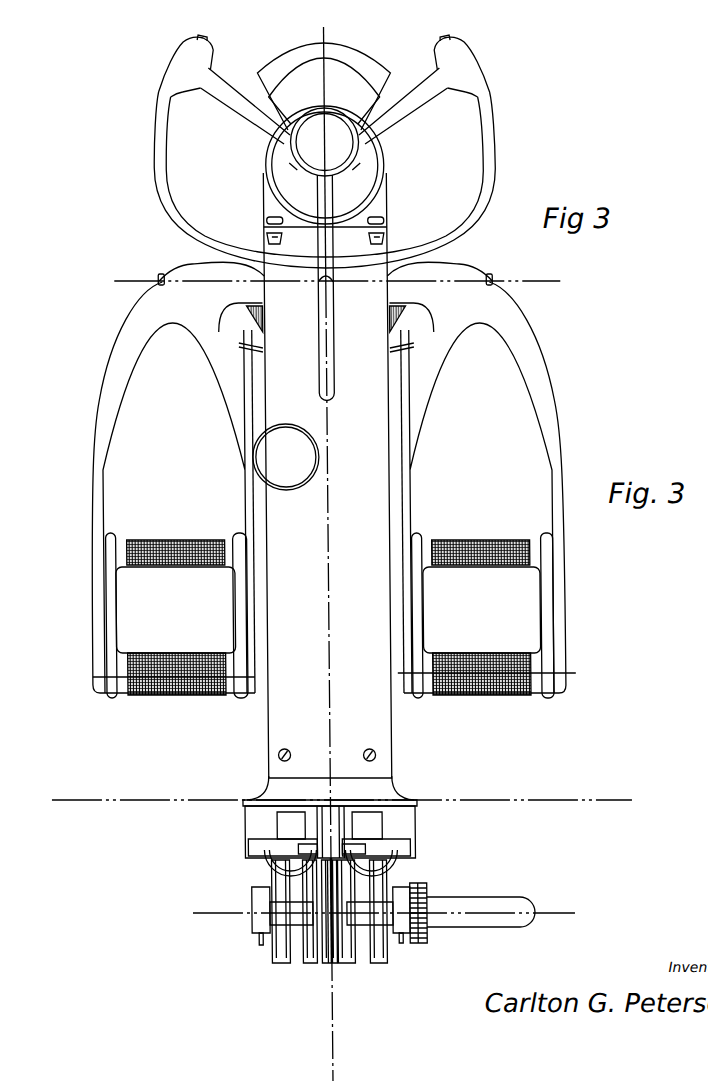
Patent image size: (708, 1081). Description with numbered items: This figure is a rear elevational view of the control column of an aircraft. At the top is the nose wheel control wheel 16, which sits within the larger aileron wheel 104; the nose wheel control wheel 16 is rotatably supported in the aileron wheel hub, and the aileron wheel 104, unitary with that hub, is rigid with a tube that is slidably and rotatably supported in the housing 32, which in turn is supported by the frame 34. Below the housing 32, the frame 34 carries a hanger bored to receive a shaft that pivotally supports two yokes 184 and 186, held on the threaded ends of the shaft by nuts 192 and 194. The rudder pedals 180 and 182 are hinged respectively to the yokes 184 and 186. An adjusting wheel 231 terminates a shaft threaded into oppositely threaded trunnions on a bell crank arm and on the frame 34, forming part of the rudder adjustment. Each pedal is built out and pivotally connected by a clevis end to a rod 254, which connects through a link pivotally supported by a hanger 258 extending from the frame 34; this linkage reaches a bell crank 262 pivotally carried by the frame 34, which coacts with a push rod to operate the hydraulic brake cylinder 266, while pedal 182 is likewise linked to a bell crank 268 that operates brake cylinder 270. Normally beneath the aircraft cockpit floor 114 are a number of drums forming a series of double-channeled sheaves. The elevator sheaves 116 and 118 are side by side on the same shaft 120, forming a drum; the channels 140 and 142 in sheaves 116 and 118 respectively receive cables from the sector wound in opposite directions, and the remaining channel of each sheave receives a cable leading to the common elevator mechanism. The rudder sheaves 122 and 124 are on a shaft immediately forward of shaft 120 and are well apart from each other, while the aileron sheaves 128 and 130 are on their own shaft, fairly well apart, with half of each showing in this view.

The nose wheel control wheel 16 is at (290, 50).
The aileron wheel 104 is at (493, 128).
The housing 32 is at (266, 180).
The frame 34 is at (387, 477).
The nut 192 is at (156, 279).
The nut 194 is at (490, 280).
The yoke 184 is at (90, 441).
The yoke 186 is at (560, 388).
The hanger 258 is at (243, 330).
The rod 254 is at (247, 373).
The adjusting wheel 231 is at (292, 490).
The rudder pedal 180 is at (146, 697).
The rudder pedal 182 is at (491, 695).
The aircraft cockpit floor 114 is at (522, 800).
The bell crank 262 is at (270, 812).
The hydraulic brake cylinder 266 is at (252, 839).
The bell crank 268 is at (385, 808).
The brake cylinder 270 is at (393, 827).
The rudder sheave 122 is at (273, 963).
The shaft 120 is at (286, 963).
The aileron sheave 128 is at (291, 963).
The elevator sheave 116 is at (309, 963).
The channel 140 is at (317, 963).
The channel 142 is at (320, 963).
The elevator sheave 118 is at (331, 963).
The aileron sheave 130 is at (346, 963).
The rudder sheave 124 is at (371, 963).